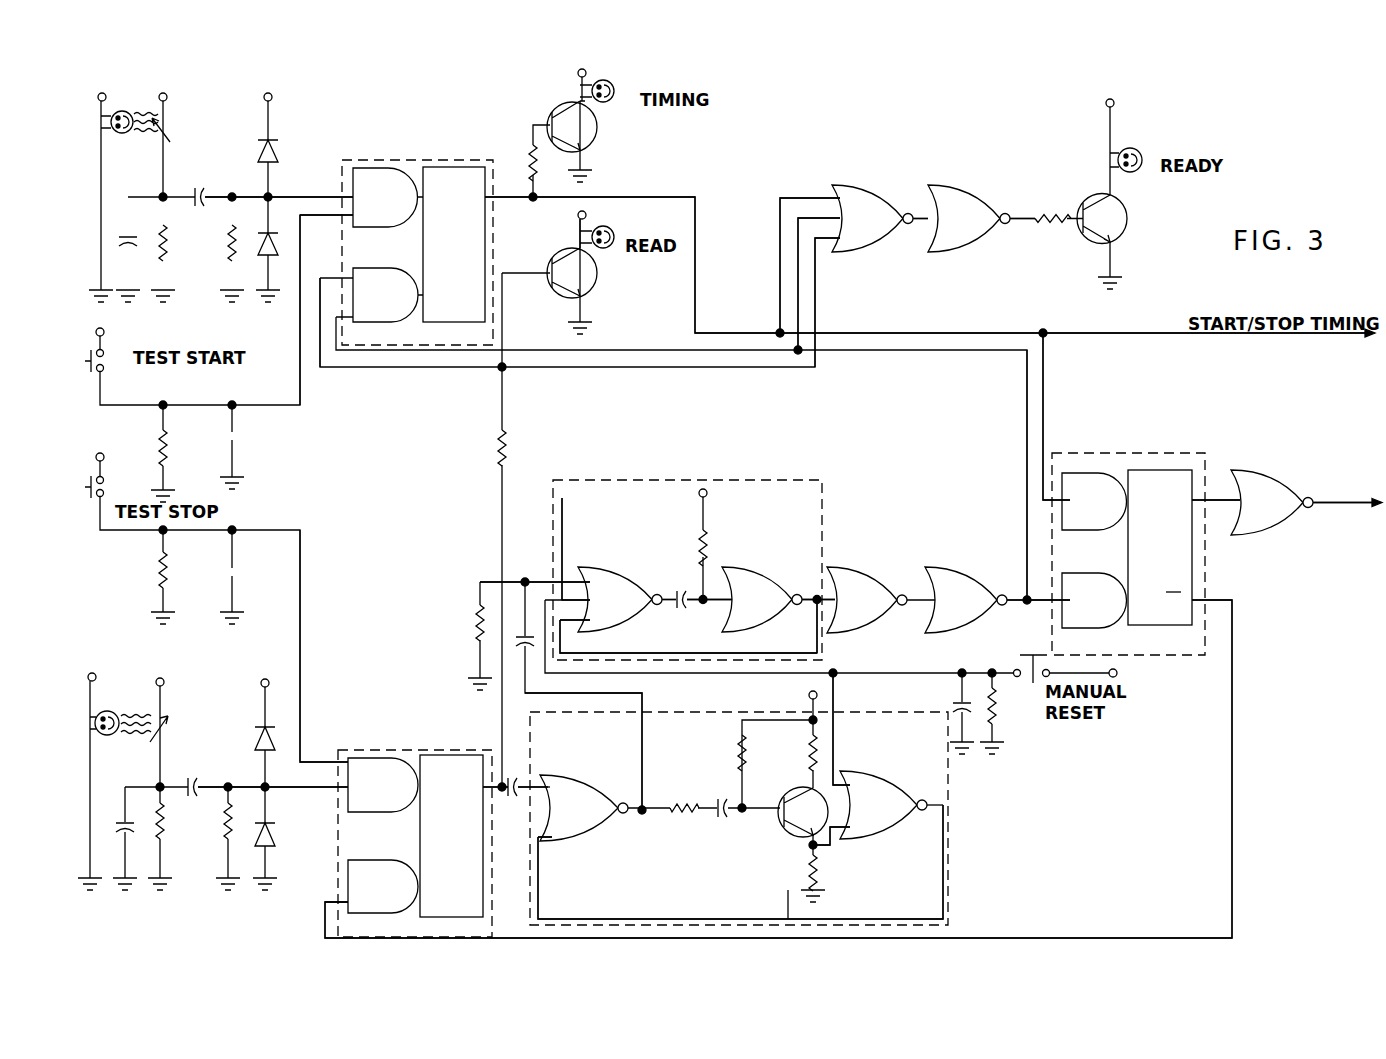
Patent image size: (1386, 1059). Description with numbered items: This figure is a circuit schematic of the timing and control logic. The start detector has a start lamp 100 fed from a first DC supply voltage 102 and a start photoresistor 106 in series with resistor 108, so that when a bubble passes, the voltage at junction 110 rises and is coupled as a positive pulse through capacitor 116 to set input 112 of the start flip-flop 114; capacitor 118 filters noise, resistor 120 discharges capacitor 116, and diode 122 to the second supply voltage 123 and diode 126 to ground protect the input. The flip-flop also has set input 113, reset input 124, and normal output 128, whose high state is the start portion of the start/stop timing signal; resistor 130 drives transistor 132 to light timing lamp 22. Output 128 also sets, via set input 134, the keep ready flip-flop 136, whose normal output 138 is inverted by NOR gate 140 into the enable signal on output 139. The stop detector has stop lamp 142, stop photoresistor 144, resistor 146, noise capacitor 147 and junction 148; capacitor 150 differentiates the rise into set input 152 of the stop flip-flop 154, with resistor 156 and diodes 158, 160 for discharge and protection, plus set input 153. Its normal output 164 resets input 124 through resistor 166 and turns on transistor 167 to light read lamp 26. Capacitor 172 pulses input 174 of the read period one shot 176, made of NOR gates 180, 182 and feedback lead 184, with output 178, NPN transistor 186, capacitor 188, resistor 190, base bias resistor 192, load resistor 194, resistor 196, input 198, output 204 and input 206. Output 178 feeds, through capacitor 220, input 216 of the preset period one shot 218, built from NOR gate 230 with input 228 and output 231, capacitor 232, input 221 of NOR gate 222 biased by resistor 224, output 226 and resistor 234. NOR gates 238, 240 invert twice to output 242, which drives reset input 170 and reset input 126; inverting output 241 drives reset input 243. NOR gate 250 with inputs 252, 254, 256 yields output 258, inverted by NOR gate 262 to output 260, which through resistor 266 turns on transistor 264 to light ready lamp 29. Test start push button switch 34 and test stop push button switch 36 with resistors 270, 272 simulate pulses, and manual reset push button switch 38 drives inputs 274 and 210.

The timing lamp 22 is at (614, 88).
The read lamp 26 is at (604, 234).
The ready lamp 29 is at (1132, 148).
The test start push button switch 34 is at (88, 364).
The test stop push button switch 36 is at (88, 494).
The manual reset push button switch 38 is at (1022, 664).
The start lamp 100 is at (122, 110).
The first DC supply voltage 102 is at (1126, 97).
The start photoresistor 106 is at (166, 110).
The resistor 108 is at (169, 238).
The junction 110 is at (182, 192).
The set input 112 is at (330, 196).
The set input 113 is at (322, 238).
The start flip-flop 114 is at (389, 160).
The capacitor 116 is at (212, 194).
The capacitor 118 is at (112, 240).
The resistor 120 is at (226, 254).
The diode 122 is at (282, 152).
The second supply voltage 123 is at (272, 95).
The reset input 124 is at (326, 282).
The diode / reset input 126 is at (276, 239).
The normal output 128 is at (524, 198).
The resistor 130 is at (530, 148).
The transistor 132 is at (598, 136).
The set input 134 is at (1042, 490).
The keep ready flip-flop 136 is at (1121, 454).
The normal output 138 is at (1214, 500).
The output 139 is at (1344, 504).
The NOR gate 140 is at (1276, 470).
The stop lamp 142 is at (106, 712).
The stop photoresistor 144 is at (168, 708).
The resistor 146 is at (166, 818).
The capacitor 147 is at (122, 824).
The junction 148 is at (164, 782).
The capacitor 150 is at (204, 786).
The set input 152 is at (312, 788).
The set input 153 is at (306, 748).
The stop flip-flop 154 is at (412, 750).
The resistor 156 is at (224, 828).
The diode 158 is at (278, 738).
The diode 160 is at (276, 840).
The normal output 164 is at (500, 792).
The resistor 166 is at (510, 454).
The transistor 167 is at (594, 282).
The reset input 170 is at (1040, 604).
The capacitor 172 is at (508, 774).
The input 174 is at (529, 782).
The read period one shot 176 is at (674, 716).
The output 178 is at (580, 698).
The NOR gate 180 is at (586, 784).
The NOR gate 182 is at (864, 754).
The lead 184 is at (788, 890).
The NPN transistor 186 is at (786, 834).
The capacitor 188 is at (716, 826).
The resistor 190 is at (684, 804).
The base bias resistor 192 is at (748, 752).
The load resistor 194 is at (808, 758).
The resistor 196 is at (818, 864).
The input 198 is at (834, 846).
The output 204 is at (936, 808).
The input 206 is at (543, 842).
The input 210 is at (834, 750).
The input 216 is at (544, 582).
The preset period one shot 218 is at (658, 480).
The capacitor 220 is at (514, 644).
The input 221 is at (704, 606).
The NOR gate 222 is at (737, 566).
The resistor 224 is at (700, 546).
The output 226 is at (806, 596).
The input 228 is at (570, 620).
The NOR gate 230 is at (586, 568).
The output 231 is at (670, 592).
The capacitor 232 is at (664, 606).
The resistor 234 is at (476, 618).
The NOR gate 238 is at (850, 566).
The NOR gate 240 is at (950, 566).
The inverting output 241 is at (1212, 600).
The output 242 is at (1016, 604).
The reset input 243 is at (324, 902).
The NOR gate 250 is at (856, 186).
The input 252 is at (786, 196).
The input 254 is at (810, 198).
The input 256 is at (818, 254).
The output 258 is at (918, 238).
The output 260 is at (1022, 214).
The NOR gate 262 is at (950, 186).
The transistor 264 is at (1128, 216).
The resistor 266 is at (1046, 226).
The resistor 270 is at (168, 444).
The resistor 272 is at (166, 568).
The input 274 is at (562, 522).